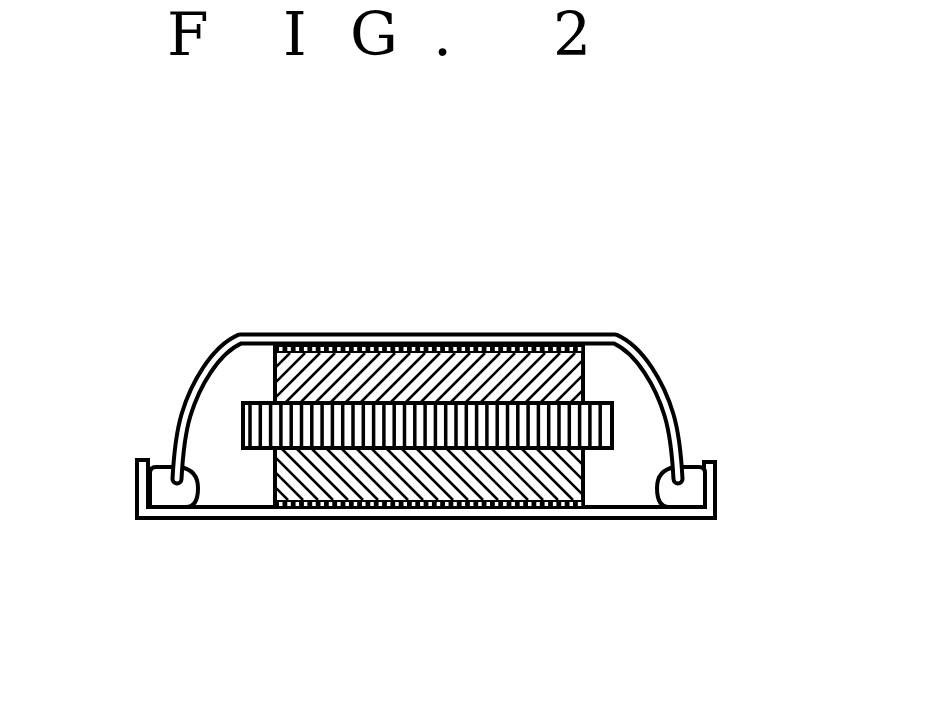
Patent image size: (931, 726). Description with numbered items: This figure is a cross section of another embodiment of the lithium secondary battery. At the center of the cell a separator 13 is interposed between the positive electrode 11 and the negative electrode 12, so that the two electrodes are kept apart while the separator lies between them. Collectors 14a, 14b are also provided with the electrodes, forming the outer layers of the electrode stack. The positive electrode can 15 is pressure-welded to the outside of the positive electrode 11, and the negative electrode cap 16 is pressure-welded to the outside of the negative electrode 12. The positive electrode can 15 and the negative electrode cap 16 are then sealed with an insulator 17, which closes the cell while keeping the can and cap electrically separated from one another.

The positive electrode 11 is at (583, 485).
The negative electrode 12 is at (583, 375).
The separator 13 is at (612, 425).
The collector 14a is at (489, 519).
The collector 14b is at (492, 349).
The positive electrode can 15 is at (240, 518).
The negative electrode cap 16 is at (215, 353).
The insulator 17 is at (159, 466).